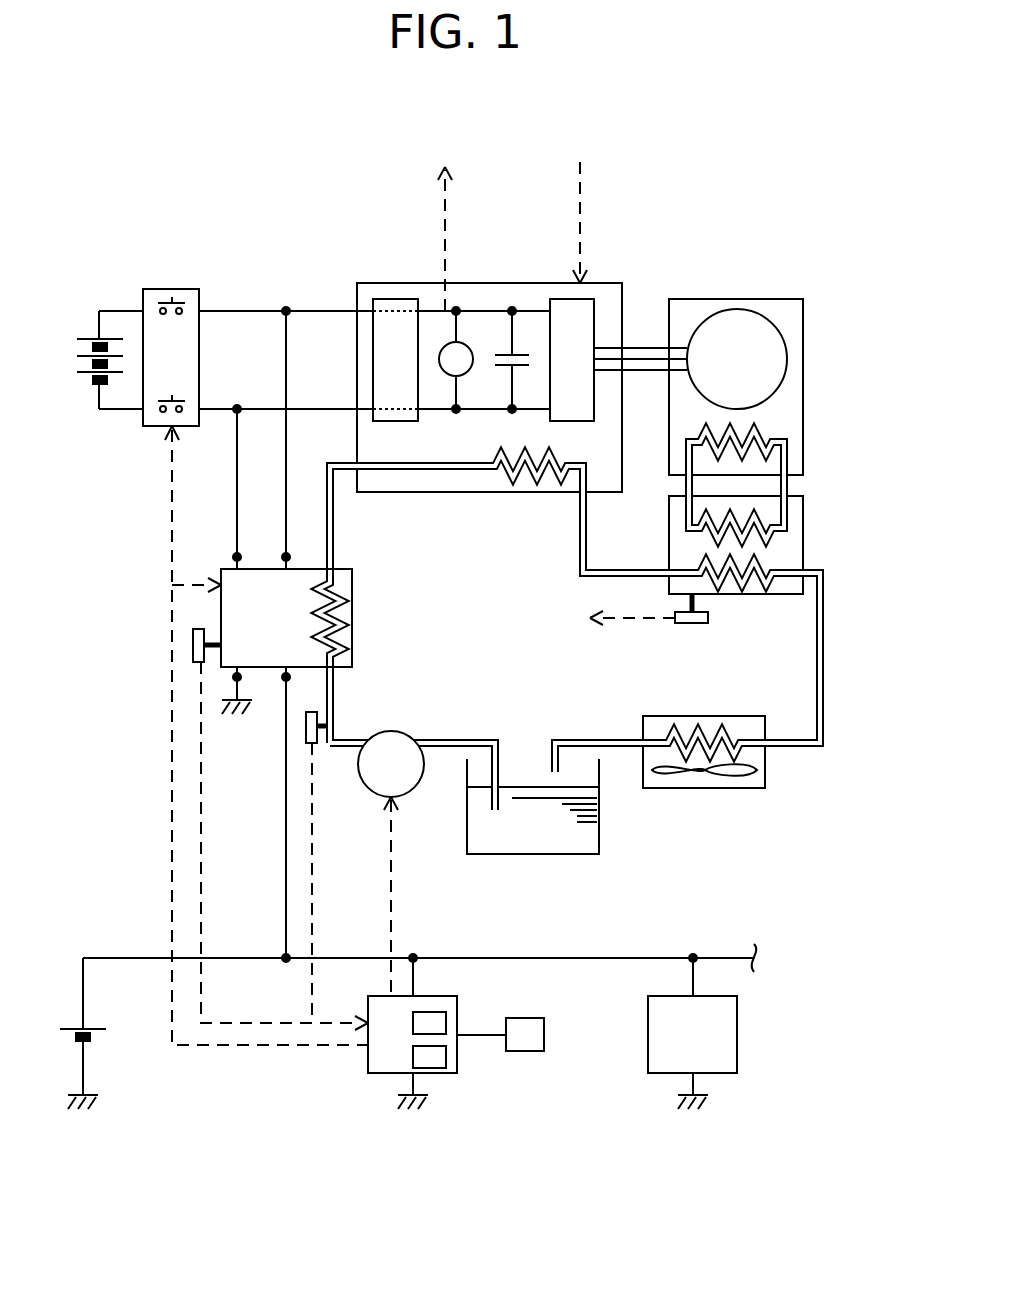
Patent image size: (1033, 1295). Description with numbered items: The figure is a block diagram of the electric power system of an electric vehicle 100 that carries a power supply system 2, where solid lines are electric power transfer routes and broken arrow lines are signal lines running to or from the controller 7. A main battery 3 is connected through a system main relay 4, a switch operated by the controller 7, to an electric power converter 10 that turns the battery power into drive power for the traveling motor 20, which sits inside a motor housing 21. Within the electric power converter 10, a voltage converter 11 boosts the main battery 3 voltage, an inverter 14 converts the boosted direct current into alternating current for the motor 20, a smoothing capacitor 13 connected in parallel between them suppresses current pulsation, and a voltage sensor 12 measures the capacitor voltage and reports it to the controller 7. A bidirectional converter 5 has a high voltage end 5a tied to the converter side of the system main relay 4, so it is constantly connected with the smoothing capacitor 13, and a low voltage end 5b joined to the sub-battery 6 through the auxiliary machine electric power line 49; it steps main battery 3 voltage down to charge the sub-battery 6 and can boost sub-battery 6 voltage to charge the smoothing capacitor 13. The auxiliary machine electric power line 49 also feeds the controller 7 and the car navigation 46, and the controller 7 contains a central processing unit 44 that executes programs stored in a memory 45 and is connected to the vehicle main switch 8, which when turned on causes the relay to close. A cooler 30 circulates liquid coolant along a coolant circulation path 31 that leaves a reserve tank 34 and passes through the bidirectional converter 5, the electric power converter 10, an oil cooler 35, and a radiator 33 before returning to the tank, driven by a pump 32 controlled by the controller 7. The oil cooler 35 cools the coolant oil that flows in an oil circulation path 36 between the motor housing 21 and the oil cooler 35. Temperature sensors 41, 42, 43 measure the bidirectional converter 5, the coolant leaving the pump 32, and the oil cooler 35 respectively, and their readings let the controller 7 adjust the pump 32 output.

The power supply system 2 is at (174, 178).
The electric vehicle 100 is at (722, 162).
The main battery 3 is at (88, 338).
The system main relay 4 is at (153, 289).
The bidirectional converter 5 is at (225, 569).
The high voltage end 5a is at (286, 556).
The low voltage end 5b is at (286, 680).
The sub-battery 6 is at (73, 1028).
The controller 7 is at (372, 1073).
The main switch 8 is at (535, 1051).
The electric power converter 10 is at (370, 283).
The voltage converter 11 is at (398, 299).
The voltage sensor 12 is at (463, 344).
The smoothing capacitor 13 is at (525, 354).
The inverter 14 is at (586, 300).
The traveling motor 20 is at (744, 310).
The motor housing 21 is at (800, 299).
The cooler 30 is at (742, 815).
The coolant circulation path 31 is at (335, 513).
The pump 32 is at (400, 733).
The radiator 33 is at (662, 716).
The reserve tank 34 is at (590, 855).
The oil cooler 35 is at (805, 538).
The oil circulation path 36 is at (791, 487).
The temperature sensor 41 is at (192, 632).
The temperature sensor 42 is at (316, 746).
The temperature sensor 43 is at (695, 625).
The central processing unit 44 is at (448, 1057).
The memory 45 is at (448, 1022).
The car navigation 46 is at (658, 1073).
The auxiliary machine electric power line 49 is at (520, 957).